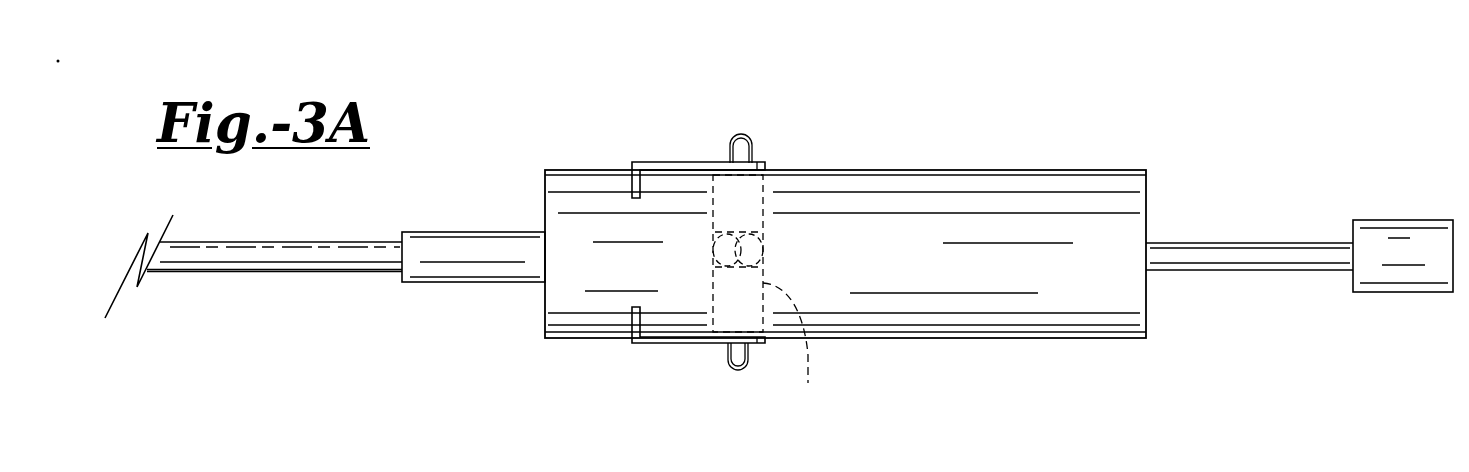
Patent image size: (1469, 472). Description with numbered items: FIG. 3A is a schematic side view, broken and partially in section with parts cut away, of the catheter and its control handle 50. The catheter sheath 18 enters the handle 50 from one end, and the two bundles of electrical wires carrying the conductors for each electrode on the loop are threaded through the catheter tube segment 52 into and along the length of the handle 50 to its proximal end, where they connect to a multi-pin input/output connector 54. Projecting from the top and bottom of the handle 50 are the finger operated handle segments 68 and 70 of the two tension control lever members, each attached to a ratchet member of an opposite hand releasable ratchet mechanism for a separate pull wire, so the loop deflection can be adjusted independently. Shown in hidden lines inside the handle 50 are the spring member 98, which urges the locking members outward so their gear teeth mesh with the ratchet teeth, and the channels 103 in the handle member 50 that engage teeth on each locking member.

The catheter sheath 18 is at (213, 243).
The handle 50 is at (990, 167).
The catheter tube segment 52 is at (413, 233).
The multi-pin input/output connector 54 is at (1388, 220).
The finger operated handle segment 68 is at (632, 190).
The finger operated handle segment 70 is at (632, 317).
The spring member 98 is at (763, 253).
The channels 103 is at (800, 348).